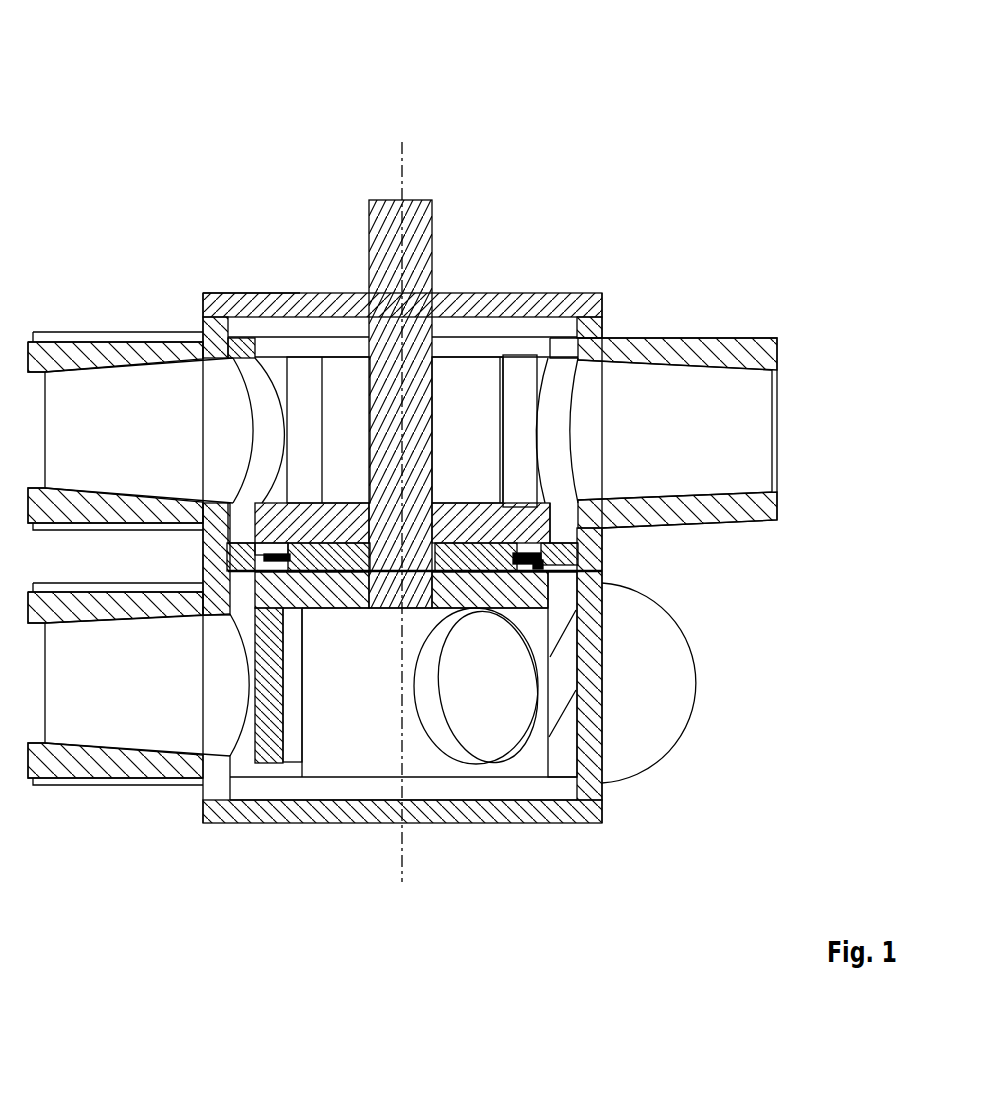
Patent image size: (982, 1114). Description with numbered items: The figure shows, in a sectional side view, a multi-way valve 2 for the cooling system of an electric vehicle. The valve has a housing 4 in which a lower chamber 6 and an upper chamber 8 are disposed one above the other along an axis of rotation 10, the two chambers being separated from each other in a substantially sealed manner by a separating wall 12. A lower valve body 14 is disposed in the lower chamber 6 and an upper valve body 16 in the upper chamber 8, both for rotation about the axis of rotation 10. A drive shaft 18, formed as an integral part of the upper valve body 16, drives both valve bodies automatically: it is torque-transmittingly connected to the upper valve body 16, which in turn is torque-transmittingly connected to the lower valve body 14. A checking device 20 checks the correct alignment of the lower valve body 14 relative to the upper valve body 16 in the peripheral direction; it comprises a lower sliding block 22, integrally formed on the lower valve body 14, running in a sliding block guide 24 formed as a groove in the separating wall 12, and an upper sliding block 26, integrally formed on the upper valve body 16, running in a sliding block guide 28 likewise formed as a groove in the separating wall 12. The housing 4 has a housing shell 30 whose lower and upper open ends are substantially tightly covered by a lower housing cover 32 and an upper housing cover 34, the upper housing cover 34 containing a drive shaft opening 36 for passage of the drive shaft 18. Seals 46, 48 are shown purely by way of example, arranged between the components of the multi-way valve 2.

The multi-way valve 2 is at (76, 128).
The housing 4 is at (222, 252).
The lower chamber 6 is at (456, 773).
The upper chamber 8 is at (484, 368).
The axis of rotation 10 is at (400, 155).
The separating wall 12 is at (505, 545).
The lower valve body 14 is at (268, 757).
The upper valve body 16 is at (523, 488).
The drive shaft 18 is at (372, 215).
The checking device 20 is at (378, 652).
The sliding block 22 is at (545, 568).
The sliding block guide 24 is at (620, 558).
The sliding block 26 is at (257, 560).
The sliding block guide 28 is at (184, 561).
The housing shell 30 is at (596, 782).
The lower housing cover 32 is at (235, 815).
The upper housing cover 34 is at (198, 293).
The drive shaft opening 36 is at (447, 281).
The seal 46 is at (560, 347).
The seal 48 is at (560, 665).